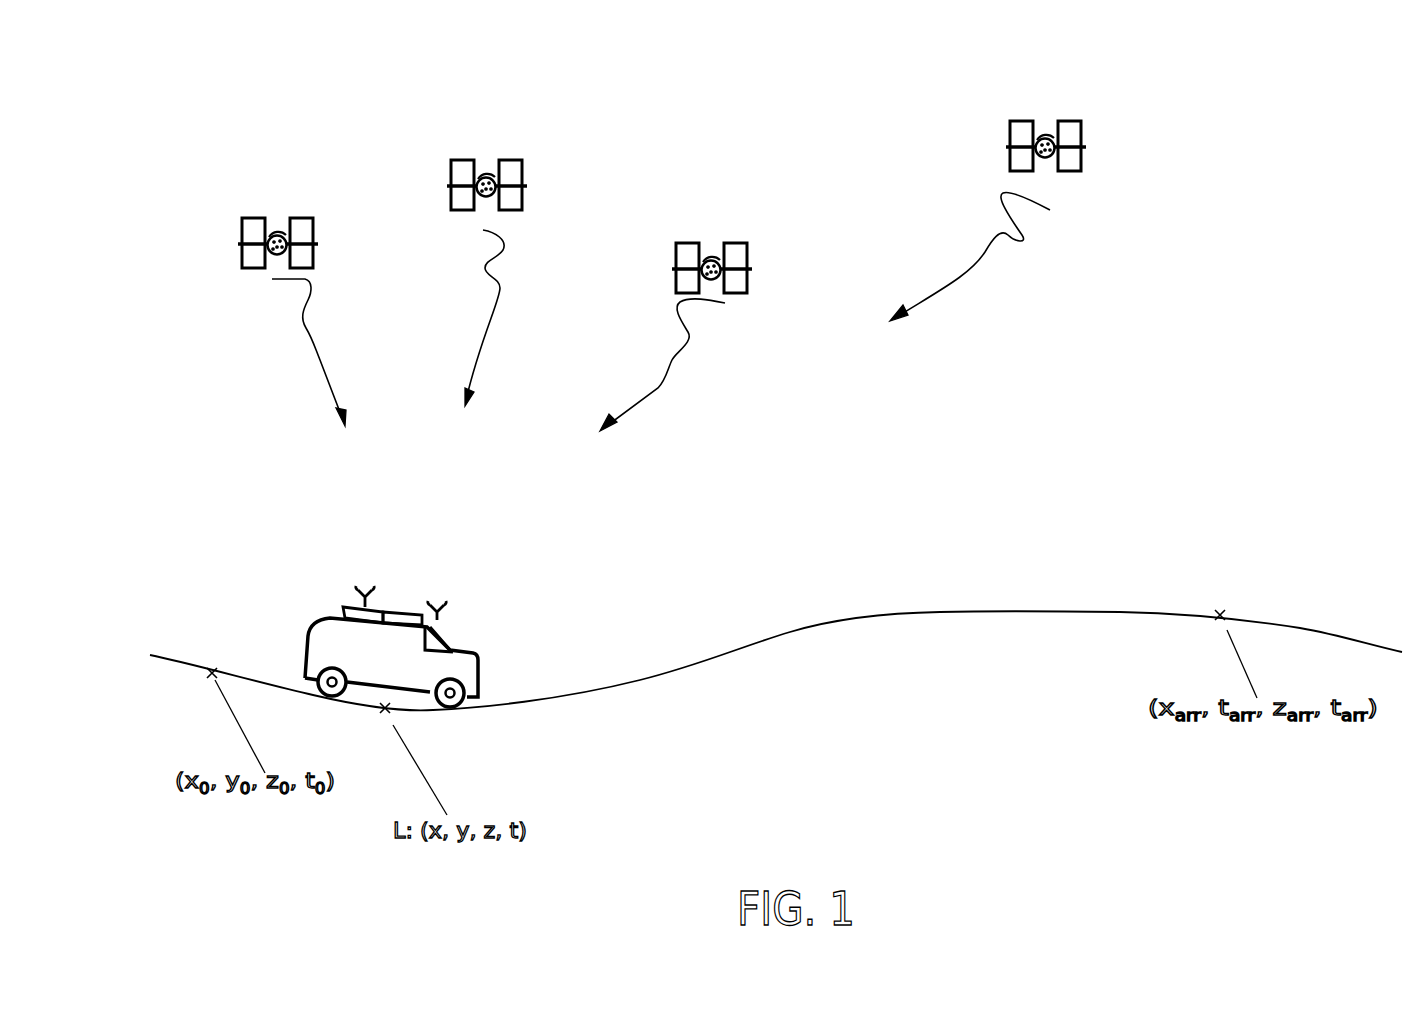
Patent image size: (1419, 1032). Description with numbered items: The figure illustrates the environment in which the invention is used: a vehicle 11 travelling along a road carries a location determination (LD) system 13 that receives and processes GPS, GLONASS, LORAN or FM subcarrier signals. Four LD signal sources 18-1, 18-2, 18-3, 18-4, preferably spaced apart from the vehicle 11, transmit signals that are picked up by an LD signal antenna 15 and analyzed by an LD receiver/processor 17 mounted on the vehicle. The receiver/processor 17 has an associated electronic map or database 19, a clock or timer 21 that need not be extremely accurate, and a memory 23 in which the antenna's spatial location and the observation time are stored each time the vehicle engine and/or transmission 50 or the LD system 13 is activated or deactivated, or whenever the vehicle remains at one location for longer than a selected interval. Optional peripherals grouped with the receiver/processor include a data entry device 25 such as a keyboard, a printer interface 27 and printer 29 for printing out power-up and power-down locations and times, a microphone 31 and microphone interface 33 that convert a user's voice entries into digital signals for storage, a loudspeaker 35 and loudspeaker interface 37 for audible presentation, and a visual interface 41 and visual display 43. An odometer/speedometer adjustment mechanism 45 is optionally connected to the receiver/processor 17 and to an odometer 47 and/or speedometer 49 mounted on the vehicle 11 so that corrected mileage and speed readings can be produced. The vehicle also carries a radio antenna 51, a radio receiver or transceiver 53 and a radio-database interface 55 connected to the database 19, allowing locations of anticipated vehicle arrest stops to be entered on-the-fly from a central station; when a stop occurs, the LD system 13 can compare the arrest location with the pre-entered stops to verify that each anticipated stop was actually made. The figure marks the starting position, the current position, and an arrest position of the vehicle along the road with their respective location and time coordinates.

The vehicle 11 is at (330, 652).
The location determination (LD) system 13 is at (508, 534).
The LD signal antenna 15 is at (269, 532).
The LD receiver/processor 17 is at (269, 532).
The electronic map or database 19 is at (269, 532).
The clock or timer 21 is at (269, 532).
The memory 23 is at (269, 532).
The data entry device 25 is at (269, 532).
The printer interface 27 is at (269, 532).
The printer 29 is at (269, 532).
The microphone 31 is at (269, 532).
The microphone interface 33 is at (269, 532).
The loudspeaker 35 is at (269, 532).
The loudspeaker interface 37 is at (269, 532).
The visual interface 41 is at (269, 532).
The visual display 43 is at (347, 605).
The odometer/speedometer adjustment mechanism 45 is at (517, 619).
The odometer 47 is at (517, 619).
The speedometer 49 is at (517, 619).
The vehicle engine and/or transmission 50 is at (457, 670).
The radio antenna 51 is at (424, 572).
The radio receiver or transceiver 53 is at (424, 572).
The radio-database interface 55 is at (398, 618).
The LD signal source 18-1 is at (294, 222).
The LD signal source 18-2 is at (500, 165).
The LD signal source 18-3 is at (718, 256).
The LD signal source 18-4 is at (1058, 130).